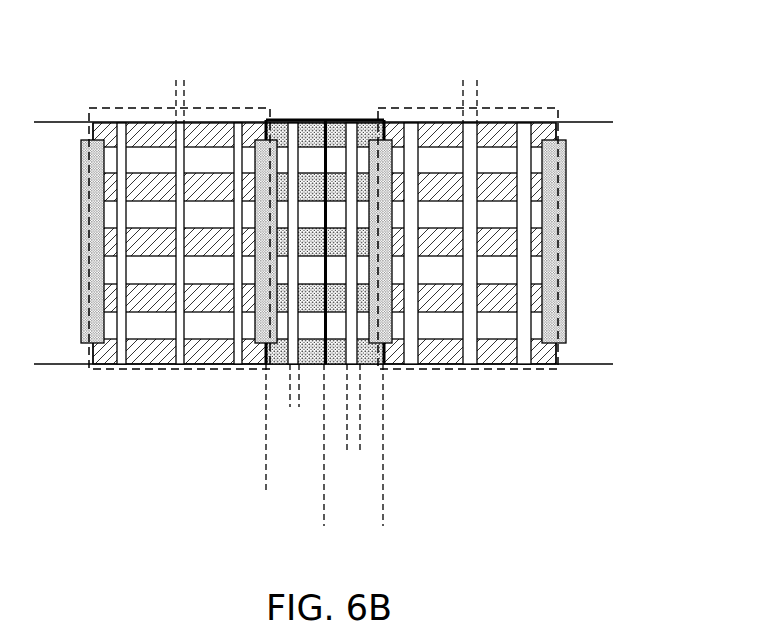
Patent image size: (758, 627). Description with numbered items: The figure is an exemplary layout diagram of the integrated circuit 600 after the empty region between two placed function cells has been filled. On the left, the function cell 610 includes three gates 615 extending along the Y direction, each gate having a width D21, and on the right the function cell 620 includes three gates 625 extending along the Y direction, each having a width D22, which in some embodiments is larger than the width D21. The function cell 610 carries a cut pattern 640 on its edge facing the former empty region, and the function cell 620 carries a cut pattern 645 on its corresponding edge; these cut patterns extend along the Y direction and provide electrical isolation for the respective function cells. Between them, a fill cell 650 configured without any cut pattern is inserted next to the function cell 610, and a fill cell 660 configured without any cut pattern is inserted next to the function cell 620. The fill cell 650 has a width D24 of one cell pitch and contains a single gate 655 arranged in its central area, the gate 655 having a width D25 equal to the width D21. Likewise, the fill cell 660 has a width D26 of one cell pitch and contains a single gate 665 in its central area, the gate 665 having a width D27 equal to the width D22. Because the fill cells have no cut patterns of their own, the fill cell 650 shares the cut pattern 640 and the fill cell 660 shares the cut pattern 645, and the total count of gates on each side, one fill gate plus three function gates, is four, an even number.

The integrated circuit 600 is at (660, 63).
The function cell 610 is at (110, 108).
The function cell 620 is at (556, 108).
The gates 615 is at (178, 364).
The gates 625 is at (470, 364).
The fill cell 650 is at (268, 120).
The fill cell 660 is at (382, 120).
The gate 655 is at (293, 130).
The gate 665 is at (351, 130).
The cut pattern 640 is at (265, 345).
The cut pattern 645 is at (385, 345).
The width D21 is at (142, 82).
The width D22 is at (428, 81).
The width D24 is at (357, 489).
The width D25 is at (257, 403).
The width D26 is at (290, 523).
The width D27 is at (313, 448).